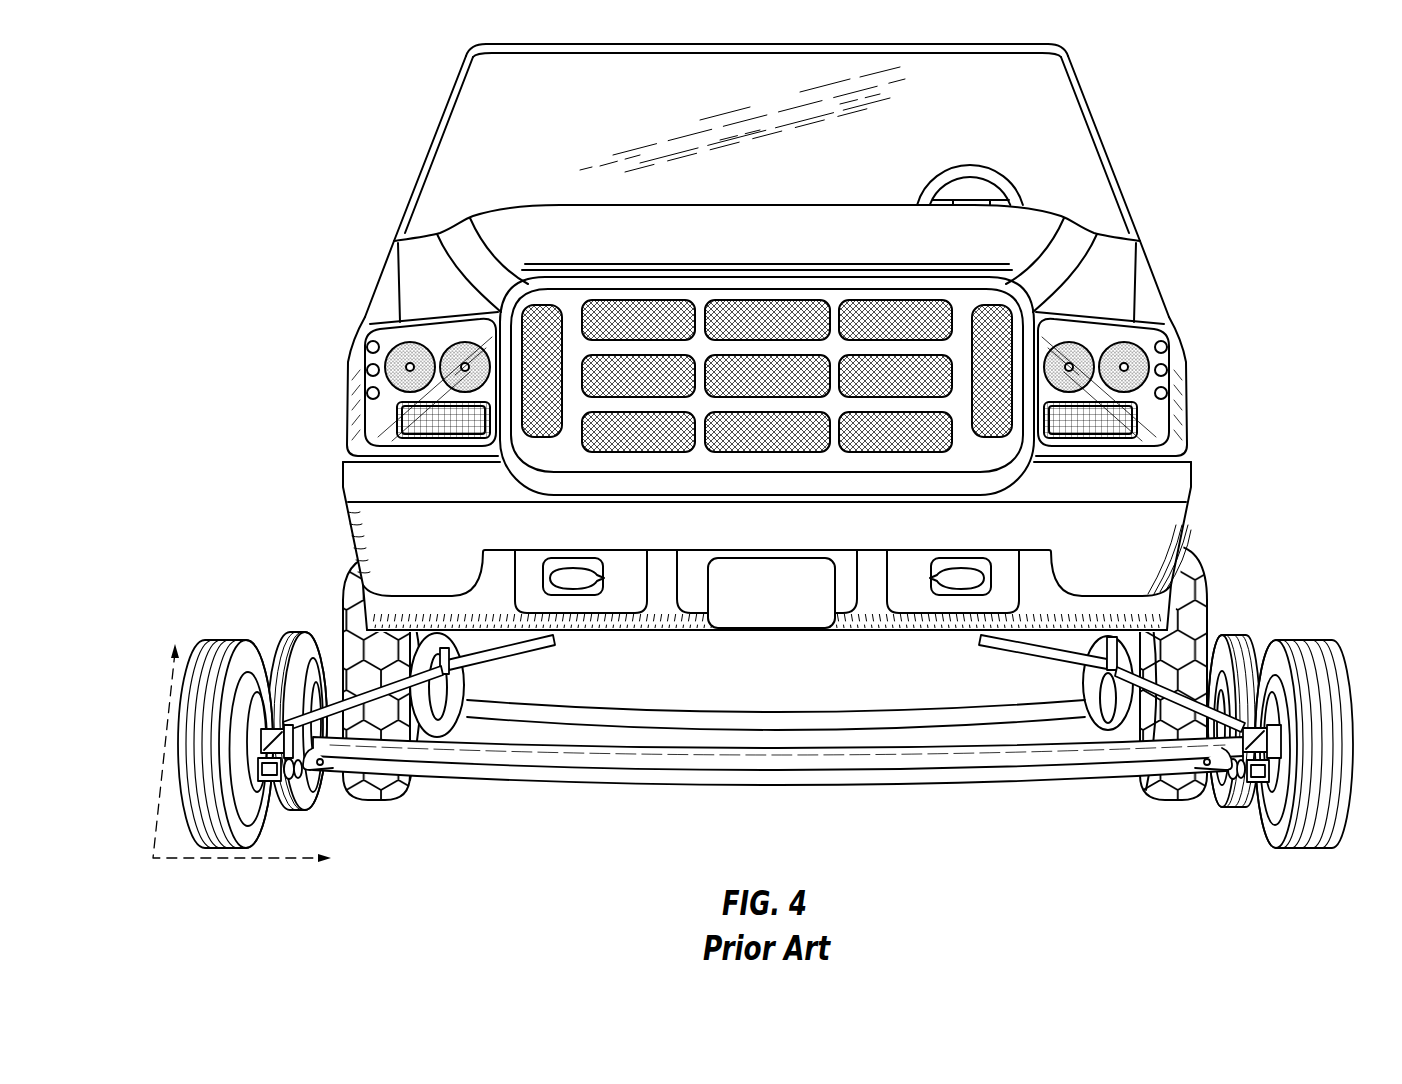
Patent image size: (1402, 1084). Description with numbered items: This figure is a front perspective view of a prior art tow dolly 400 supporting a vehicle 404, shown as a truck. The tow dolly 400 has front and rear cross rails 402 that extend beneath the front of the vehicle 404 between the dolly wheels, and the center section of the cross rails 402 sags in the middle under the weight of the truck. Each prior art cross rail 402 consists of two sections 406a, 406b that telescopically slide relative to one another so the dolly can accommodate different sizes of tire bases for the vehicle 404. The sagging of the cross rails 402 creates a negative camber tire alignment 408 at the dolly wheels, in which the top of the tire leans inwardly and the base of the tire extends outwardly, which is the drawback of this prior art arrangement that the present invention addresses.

The prior art tow dolly 400 is at (749, 725).
The cross rail 402 is at (668, 805).
The vehicle 404 is at (378, 92).
The section 406a is at (513, 778).
The section 406b is at (1017, 773).
The negative camber tire alignment 408 is at (187, 860).